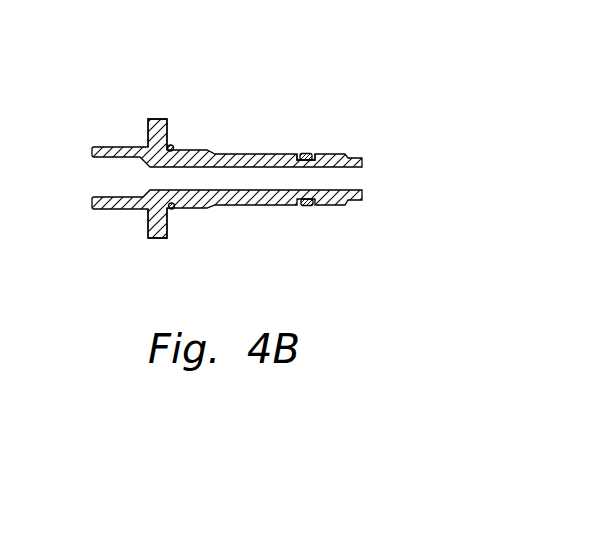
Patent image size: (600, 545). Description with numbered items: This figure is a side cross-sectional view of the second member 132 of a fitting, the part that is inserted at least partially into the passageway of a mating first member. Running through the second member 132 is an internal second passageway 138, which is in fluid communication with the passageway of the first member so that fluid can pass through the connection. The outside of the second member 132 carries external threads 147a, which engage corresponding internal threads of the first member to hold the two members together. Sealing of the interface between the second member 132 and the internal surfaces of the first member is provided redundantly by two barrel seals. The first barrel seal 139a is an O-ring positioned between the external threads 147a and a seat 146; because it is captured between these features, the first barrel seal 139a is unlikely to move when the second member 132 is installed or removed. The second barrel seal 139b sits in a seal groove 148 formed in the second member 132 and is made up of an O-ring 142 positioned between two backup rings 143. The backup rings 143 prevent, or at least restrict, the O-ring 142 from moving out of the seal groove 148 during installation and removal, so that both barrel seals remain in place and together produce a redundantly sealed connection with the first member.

The second member 132 is at (245, 232).
The second passageway 138 is at (200, 190).
The first barrel seal 139a is at (172, 210).
The second barrel seal 139b is at (332, 123).
The O-ring 142 is at (310, 153).
The backup rings 143 is at (305, 207).
The seat 146 is at (165, 119).
The external threads 147a is at (197, 147).
The seal groove 148 is at (300, 143).